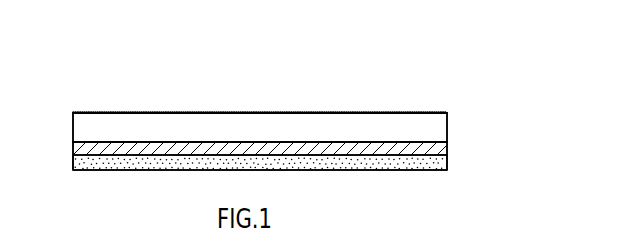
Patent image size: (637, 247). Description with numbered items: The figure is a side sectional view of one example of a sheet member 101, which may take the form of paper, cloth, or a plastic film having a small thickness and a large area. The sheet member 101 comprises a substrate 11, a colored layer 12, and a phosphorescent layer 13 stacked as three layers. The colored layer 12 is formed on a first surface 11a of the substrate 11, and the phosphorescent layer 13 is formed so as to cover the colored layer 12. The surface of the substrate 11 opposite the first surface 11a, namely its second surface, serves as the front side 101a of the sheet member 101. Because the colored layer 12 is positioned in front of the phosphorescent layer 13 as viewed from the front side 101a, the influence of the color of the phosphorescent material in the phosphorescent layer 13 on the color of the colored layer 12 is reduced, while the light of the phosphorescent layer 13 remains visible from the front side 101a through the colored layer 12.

The sheet member 101 is at (128, 94).
The front side 101a is at (363, 112).
The substrate 11 is at (442, 130).
The first surface 11a is at (347, 142).
The colored layer 12 is at (442, 150).
The phosphorescent layer 13 is at (442, 163).